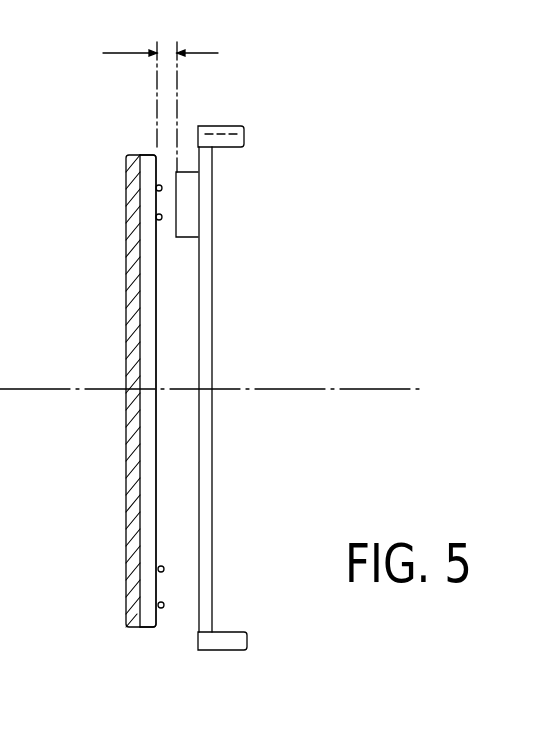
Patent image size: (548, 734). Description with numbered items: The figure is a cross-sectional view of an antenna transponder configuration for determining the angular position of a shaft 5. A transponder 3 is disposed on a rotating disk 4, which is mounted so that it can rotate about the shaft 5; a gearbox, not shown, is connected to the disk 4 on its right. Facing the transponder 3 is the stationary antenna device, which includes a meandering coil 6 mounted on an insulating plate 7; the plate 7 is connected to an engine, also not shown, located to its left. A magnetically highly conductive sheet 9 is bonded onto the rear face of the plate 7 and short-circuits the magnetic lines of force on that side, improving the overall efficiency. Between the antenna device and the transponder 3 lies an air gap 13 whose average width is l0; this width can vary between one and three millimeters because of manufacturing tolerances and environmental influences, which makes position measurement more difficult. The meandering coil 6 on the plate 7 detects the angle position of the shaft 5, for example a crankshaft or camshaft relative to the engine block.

The transponder 3 is at (197, 208).
The rotating disk 4 is at (207, 288).
The shaft 5 is at (247, 388).
The meandering coil 6 is at (160, 222).
The insulating plate 7 is at (147, 533).
The magnetically highly conductive sheet 9 is at (130, 463).
The air gap 13 is at (137, 78).
The average width of the air gap l0 is at (197, 89).